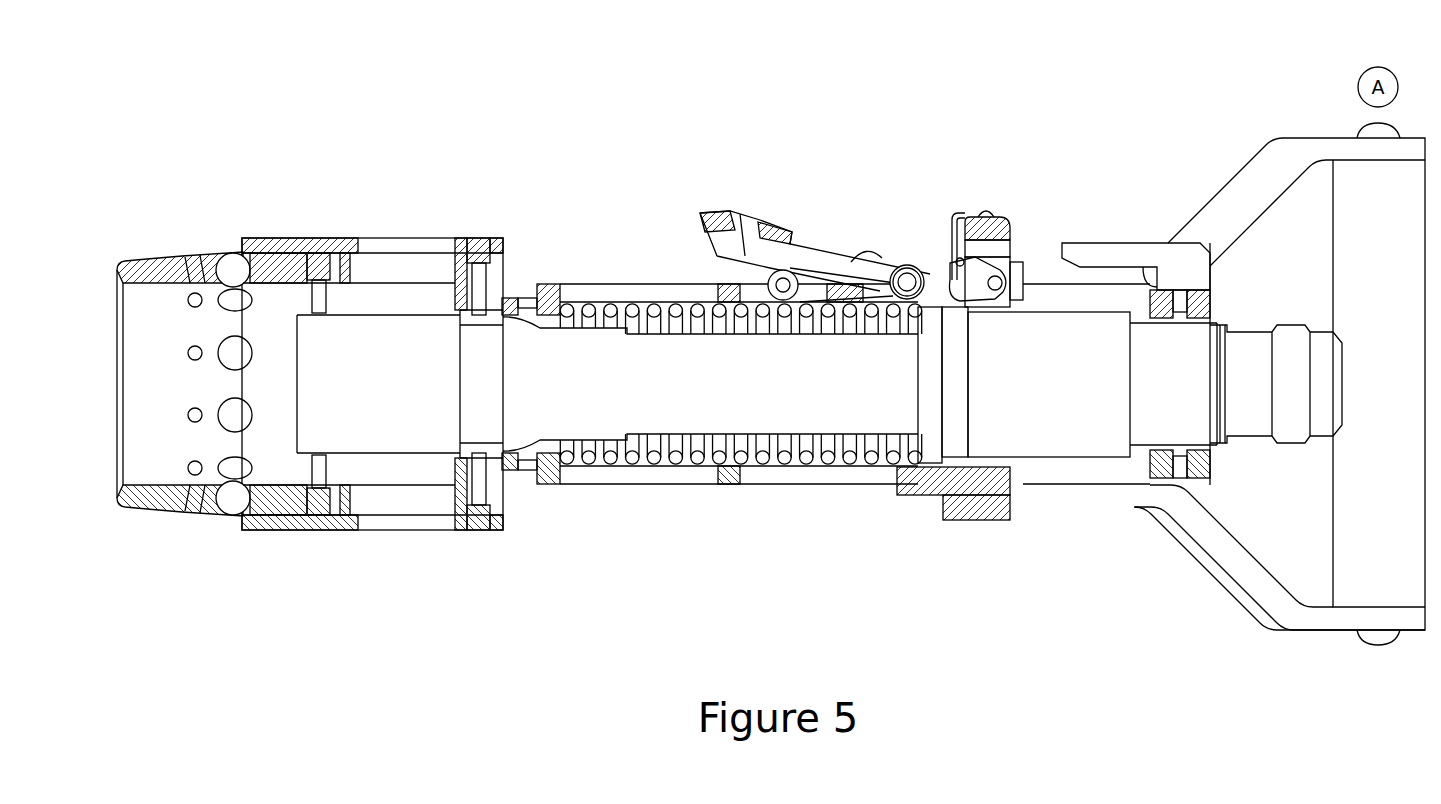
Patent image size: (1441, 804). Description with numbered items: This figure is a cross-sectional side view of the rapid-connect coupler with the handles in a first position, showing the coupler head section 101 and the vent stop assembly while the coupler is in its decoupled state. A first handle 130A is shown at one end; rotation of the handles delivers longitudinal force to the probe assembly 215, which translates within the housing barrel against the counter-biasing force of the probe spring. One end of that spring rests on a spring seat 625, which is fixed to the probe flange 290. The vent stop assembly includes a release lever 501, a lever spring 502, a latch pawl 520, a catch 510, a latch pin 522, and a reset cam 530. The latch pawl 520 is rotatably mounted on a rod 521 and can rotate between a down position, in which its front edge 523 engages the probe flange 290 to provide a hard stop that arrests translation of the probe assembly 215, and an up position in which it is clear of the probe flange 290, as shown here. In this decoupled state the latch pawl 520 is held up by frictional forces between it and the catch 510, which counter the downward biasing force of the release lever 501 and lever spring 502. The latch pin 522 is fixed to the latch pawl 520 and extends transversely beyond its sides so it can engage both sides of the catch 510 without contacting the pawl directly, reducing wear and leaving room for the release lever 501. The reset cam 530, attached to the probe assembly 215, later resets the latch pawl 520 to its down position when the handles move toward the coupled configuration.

The coupler head section 101 is at (289, 197).
The probe assembly 215 is at (766, 410).
The probe flange 290 is at (957, 438).
The release lever 501 is at (710, 213).
The lever spring 502 is at (903, 265).
The catch 510 is at (952, 213).
The latch pawl 520 is at (957, 293).
The rod 521 is at (1000, 288).
The latch pin 522 is at (967, 260).
The front edge 523 is at (943, 343).
The reset cam 530 is at (1113, 250).
The spring seat 625 is at (928, 462).
The first handle 130A is at (1323, 137).